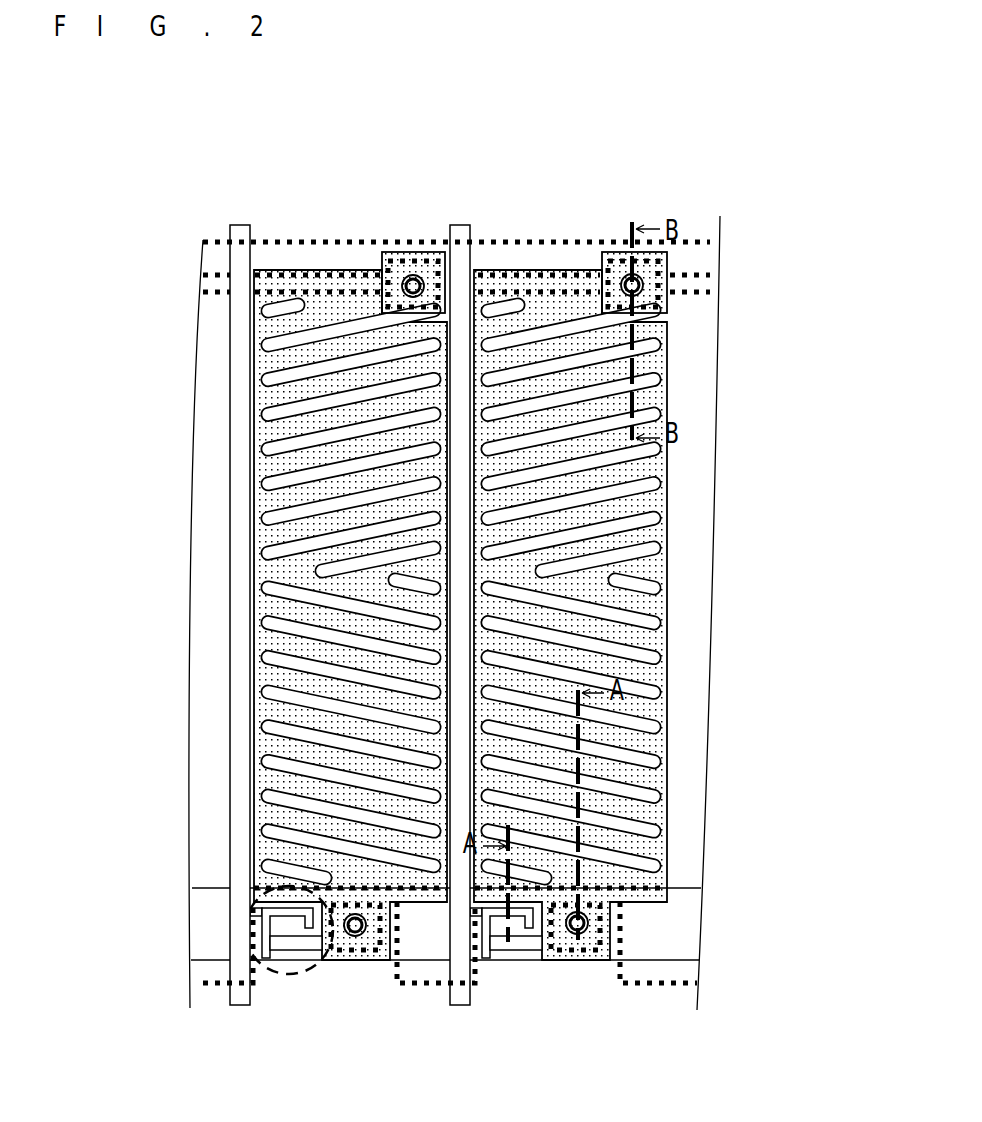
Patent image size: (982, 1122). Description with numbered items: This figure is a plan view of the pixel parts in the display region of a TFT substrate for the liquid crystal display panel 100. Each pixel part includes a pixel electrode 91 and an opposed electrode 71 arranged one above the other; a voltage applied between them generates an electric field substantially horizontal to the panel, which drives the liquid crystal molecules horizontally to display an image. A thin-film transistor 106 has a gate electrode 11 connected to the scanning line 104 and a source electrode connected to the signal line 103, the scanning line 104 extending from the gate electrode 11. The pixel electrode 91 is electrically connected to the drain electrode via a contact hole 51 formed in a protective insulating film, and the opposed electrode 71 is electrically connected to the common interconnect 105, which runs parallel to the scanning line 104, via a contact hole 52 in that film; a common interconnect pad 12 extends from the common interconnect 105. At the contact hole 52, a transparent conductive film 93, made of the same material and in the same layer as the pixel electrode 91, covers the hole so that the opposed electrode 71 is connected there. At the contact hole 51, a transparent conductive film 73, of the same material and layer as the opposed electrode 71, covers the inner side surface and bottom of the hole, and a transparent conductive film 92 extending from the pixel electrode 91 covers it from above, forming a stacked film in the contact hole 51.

The liquid crystal display panel 100 is at (700, 213).
The signal line 103 is at (240, 226).
The scanning line 104 is at (507, 924).
The gate electrode 11 is at (690, 916).
The pixel electrode 91 is at (648, 570).
The transparent conductive film 93 is at (668, 303).
The contact hole 52 is at (641, 279).
The common interconnect pad 12 is at (660, 300).
The common interconnect 105 is at (672, 286).
The transparent conductive film 92 is at (588, 944).
The contact hole 51 is at (566, 937).
The thin-film transistor 106 is at (291, 976).
The transparent conductive film 73 is at (545, 962).
The opposed electrode 71 is at (670, 990).